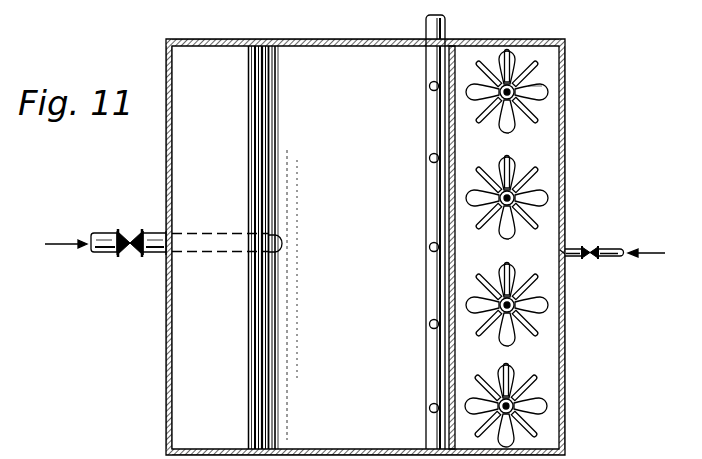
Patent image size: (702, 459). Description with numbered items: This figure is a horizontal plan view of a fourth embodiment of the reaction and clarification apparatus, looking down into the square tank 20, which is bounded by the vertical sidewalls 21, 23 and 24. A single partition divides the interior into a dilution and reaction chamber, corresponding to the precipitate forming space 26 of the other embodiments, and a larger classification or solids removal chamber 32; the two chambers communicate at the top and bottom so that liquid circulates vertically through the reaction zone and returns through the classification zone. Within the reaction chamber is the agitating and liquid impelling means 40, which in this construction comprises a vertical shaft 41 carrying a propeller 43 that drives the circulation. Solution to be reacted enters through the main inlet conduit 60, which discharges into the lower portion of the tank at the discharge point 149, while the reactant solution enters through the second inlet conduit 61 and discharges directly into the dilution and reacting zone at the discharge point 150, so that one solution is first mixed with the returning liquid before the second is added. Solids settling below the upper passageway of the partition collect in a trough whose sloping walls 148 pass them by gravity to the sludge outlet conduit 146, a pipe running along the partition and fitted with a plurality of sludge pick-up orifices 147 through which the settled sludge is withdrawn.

The tank 20 is at (562, 73).
The sidewall 21 is at (565, 182).
The sidewall 23 is at (167, 336).
The sidewall 24 is at (356, 38).
The precipitate forming space 26 is at (550, 355).
The classification chamber 32 is at (207, 57).
The agitating and liquid impelling means 40 is at (512, 110).
The shaft 41 is at (531, 425).
The propeller 43 is at (537, 98).
The inlet conduit 60 is at (153, 233).
The second inlet conduit 61 is at (611, 248).
The sludge outlet conduit 146 is at (448, 22).
The sludge pick-up orifices 147 is at (434, 253).
The sloping walls 148 is at (275, 368).
The discharge of main inlet conduit 149 is at (283, 243).
The discharge of second inlet conduit 150 is at (566, 254).